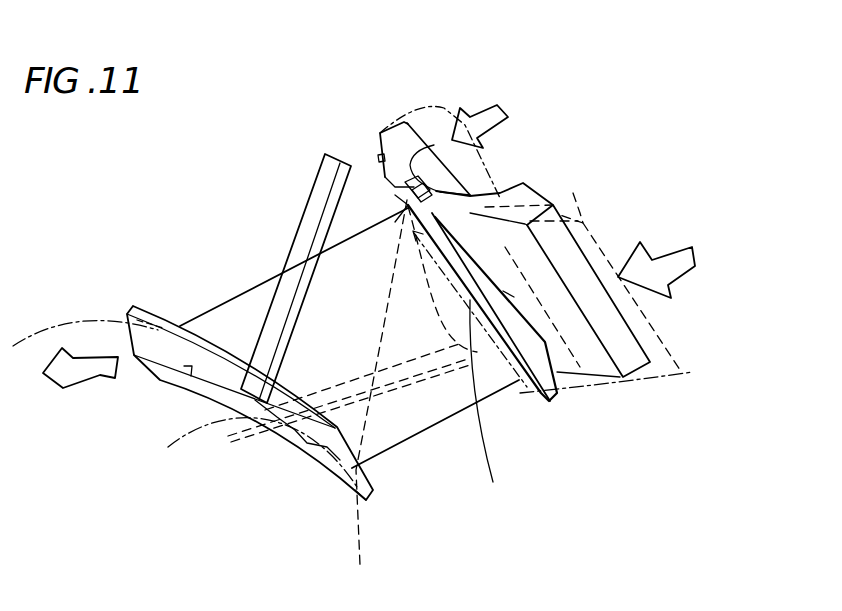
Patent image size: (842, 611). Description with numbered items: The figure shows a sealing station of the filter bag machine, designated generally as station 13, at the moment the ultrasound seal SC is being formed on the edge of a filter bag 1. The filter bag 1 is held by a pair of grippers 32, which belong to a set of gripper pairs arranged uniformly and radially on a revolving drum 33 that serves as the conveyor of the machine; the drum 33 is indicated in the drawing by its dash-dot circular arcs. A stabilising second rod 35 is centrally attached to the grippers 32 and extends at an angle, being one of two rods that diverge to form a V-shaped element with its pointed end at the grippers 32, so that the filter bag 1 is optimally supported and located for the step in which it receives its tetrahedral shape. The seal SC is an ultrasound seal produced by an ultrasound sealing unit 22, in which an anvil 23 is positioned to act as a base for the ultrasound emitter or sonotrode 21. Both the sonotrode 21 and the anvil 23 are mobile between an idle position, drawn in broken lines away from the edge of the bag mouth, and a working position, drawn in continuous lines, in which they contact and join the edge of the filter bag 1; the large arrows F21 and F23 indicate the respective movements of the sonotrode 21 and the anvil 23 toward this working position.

The filter bag 1 is at (240, 318).
The retaining assembly 13 is at (541, 162).
The sonotrode 21 is at (535, 201).
The ultrasound sealing unit 22 is at (377, 122).
The anvil 23 is at (413, 140).
The arrow F23 is at (493, 117).
The arrow F21 is at (687, 262).
The grippers 32 is at (170, 340).
The revolving drum 33 is at (363, 525).
The second rods 35 is at (318, 188).
The seal SC is at (494, 409).